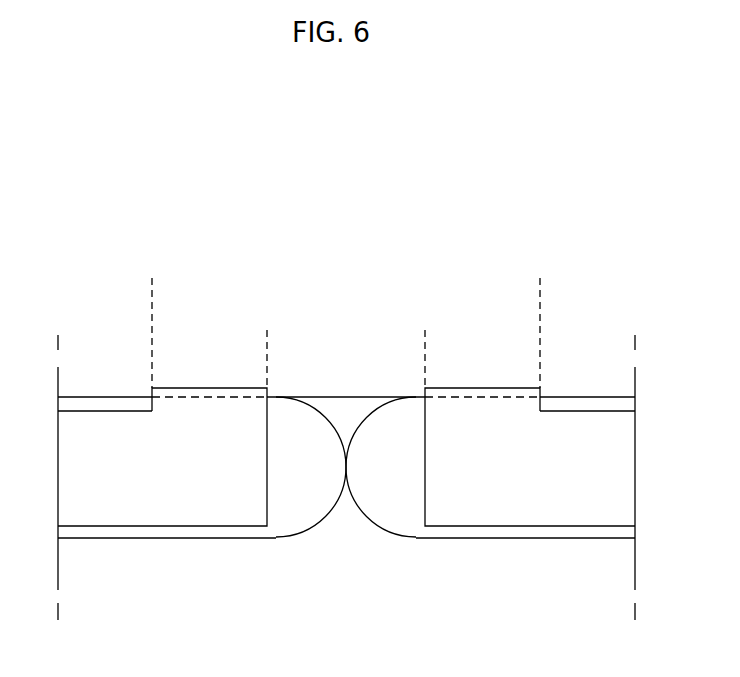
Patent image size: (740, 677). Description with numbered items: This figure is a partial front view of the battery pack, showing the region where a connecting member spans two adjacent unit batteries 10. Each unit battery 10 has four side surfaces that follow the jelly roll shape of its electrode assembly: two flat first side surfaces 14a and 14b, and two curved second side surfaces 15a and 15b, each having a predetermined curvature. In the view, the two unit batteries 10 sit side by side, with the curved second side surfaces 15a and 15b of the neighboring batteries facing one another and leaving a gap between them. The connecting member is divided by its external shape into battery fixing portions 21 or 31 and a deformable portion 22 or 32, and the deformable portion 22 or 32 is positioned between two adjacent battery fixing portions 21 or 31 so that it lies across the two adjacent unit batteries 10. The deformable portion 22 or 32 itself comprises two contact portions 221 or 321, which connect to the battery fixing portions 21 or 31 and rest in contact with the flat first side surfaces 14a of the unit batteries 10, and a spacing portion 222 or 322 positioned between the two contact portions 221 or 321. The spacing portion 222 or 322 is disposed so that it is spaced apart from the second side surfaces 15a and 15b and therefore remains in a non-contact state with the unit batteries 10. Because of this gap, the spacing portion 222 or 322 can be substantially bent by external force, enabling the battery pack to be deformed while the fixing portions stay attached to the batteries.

The unit battery 10 is at (227, 538).
The first side surface 14a is at (93, 397).
The first side surface 14b is at (95, 540).
The second side surface 15a is at (375, 528).
The second side surface 15b is at (317, 528).
The battery fixing portion 21 is at (346, 490).
The battery fixing portion 31 is at (163, 510).
The deformable portion 22 is at (346, 328).
The deformable portion 32 is at (540, 297).
The contact portion 221 is at (346, 350).
The contact portion 321 is at (267, 351).
The spacing portion 222 is at (346, 356).
The spacing portion 322 is at (425, 351).